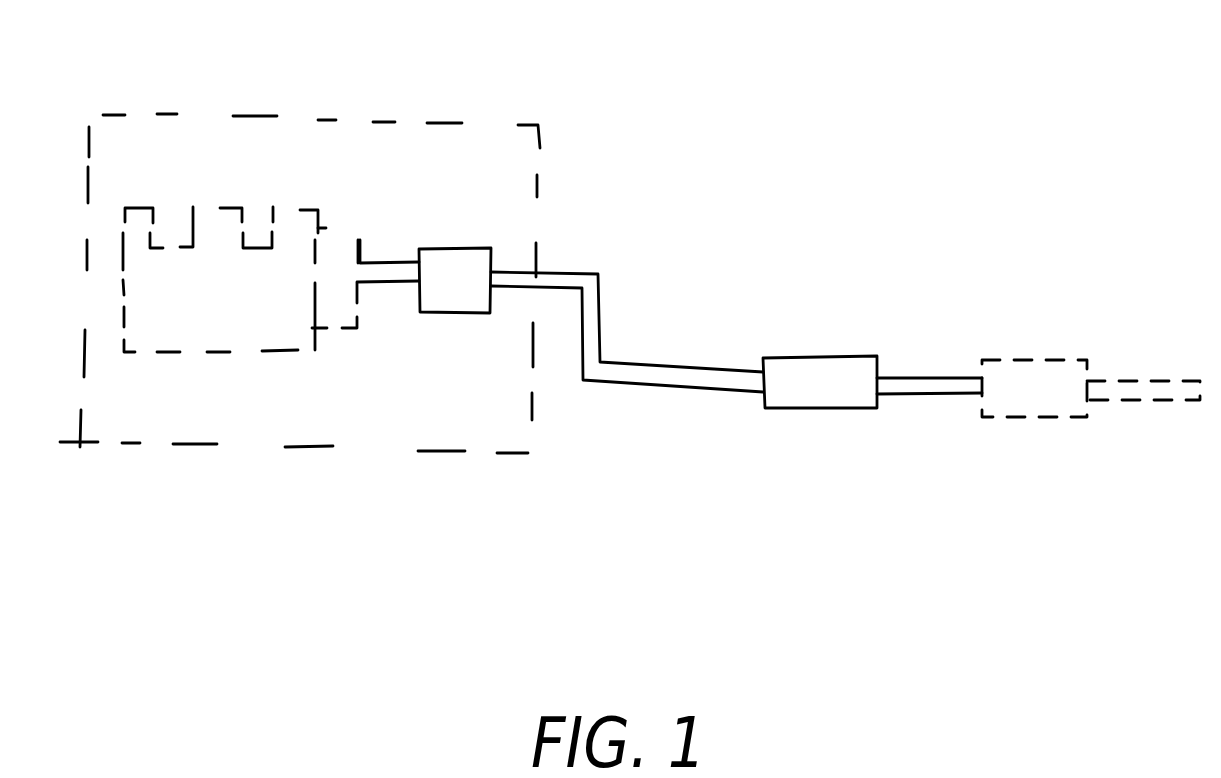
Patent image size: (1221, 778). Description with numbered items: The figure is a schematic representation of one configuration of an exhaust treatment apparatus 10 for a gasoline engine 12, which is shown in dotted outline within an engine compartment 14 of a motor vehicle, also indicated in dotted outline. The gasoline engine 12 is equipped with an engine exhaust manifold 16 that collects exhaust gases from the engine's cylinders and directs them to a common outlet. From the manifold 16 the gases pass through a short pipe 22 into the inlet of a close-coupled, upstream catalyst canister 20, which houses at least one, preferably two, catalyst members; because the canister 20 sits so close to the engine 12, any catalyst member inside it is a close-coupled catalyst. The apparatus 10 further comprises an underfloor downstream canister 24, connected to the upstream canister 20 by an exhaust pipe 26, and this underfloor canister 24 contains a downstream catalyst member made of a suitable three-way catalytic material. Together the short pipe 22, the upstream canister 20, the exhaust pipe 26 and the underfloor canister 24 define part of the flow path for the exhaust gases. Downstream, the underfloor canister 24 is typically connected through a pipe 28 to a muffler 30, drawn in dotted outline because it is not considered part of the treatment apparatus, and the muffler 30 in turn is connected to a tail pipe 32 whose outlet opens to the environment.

The exhaust treatment apparatus 10 is at (694, 254).
The gasoline engine 12 is at (173, 360).
The engine compartment 14 is at (330, 112).
The engine exhaust manifold 16 is at (366, 232).
The upstream catalyst canister 20 is at (478, 248).
The short pipe 22 is at (392, 282).
The underfloor downstream canister 24 is at (847, 408).
The exhaust pipe 26 is at (675, 366).
The pipe 28 is at (927, 377).
The muffler 30 is at (1053, 418).
The tail pipe 32 is at (1173, 403).